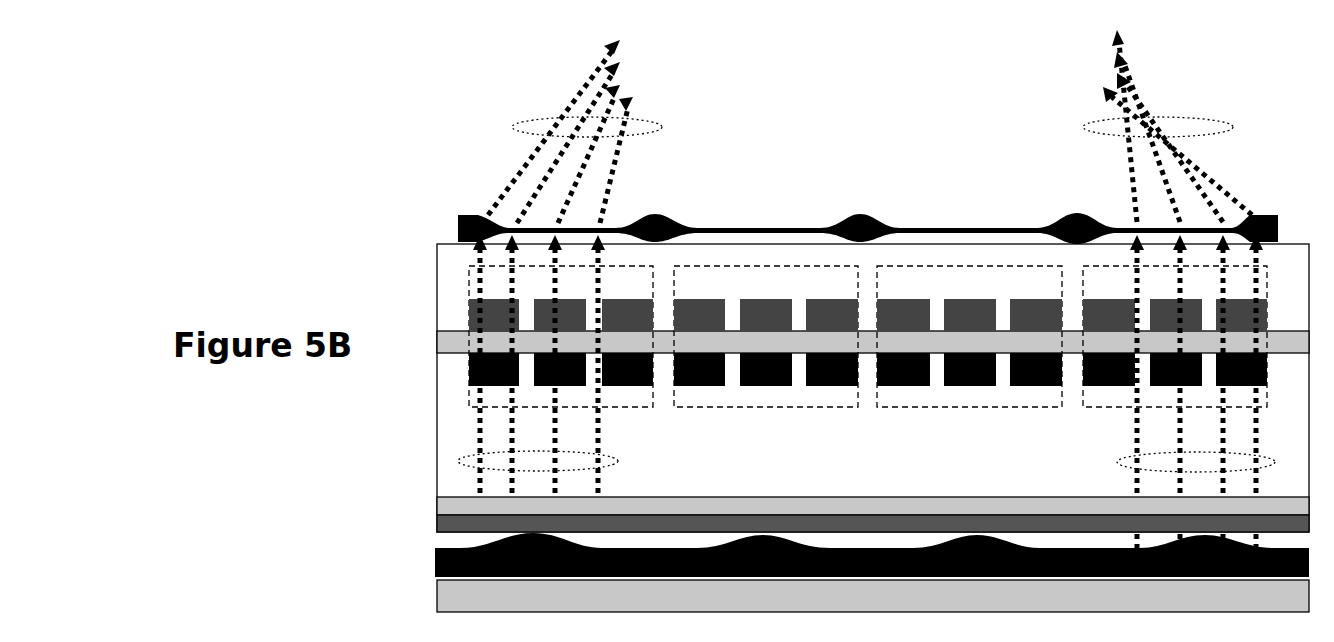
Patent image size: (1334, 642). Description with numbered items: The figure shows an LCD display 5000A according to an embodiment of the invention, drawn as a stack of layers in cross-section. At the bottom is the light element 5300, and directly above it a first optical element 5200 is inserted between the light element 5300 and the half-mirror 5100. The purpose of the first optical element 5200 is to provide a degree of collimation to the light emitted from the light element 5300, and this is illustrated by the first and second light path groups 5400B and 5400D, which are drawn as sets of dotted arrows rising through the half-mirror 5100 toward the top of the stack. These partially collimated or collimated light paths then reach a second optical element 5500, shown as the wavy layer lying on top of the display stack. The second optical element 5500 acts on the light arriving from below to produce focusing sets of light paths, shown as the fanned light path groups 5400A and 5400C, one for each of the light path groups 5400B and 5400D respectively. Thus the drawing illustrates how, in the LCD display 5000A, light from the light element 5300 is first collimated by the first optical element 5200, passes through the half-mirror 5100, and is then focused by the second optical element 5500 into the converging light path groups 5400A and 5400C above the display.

The LCD display 5000A is at (452, 163).
The half-mirror 5100 is at (437, 515).
The first optical element 5200 is at (427, 595).
The light element 5300 is at (433, 555).
The focusing light path group 5400A is at (662, 127).
The first light path group 5400B is at (613, 460).
The focusing light path group 5400C is at (1082, 127).
The second light path group 5400D is at (1125, 461).
The second optical element 5500 is at (448, 223).